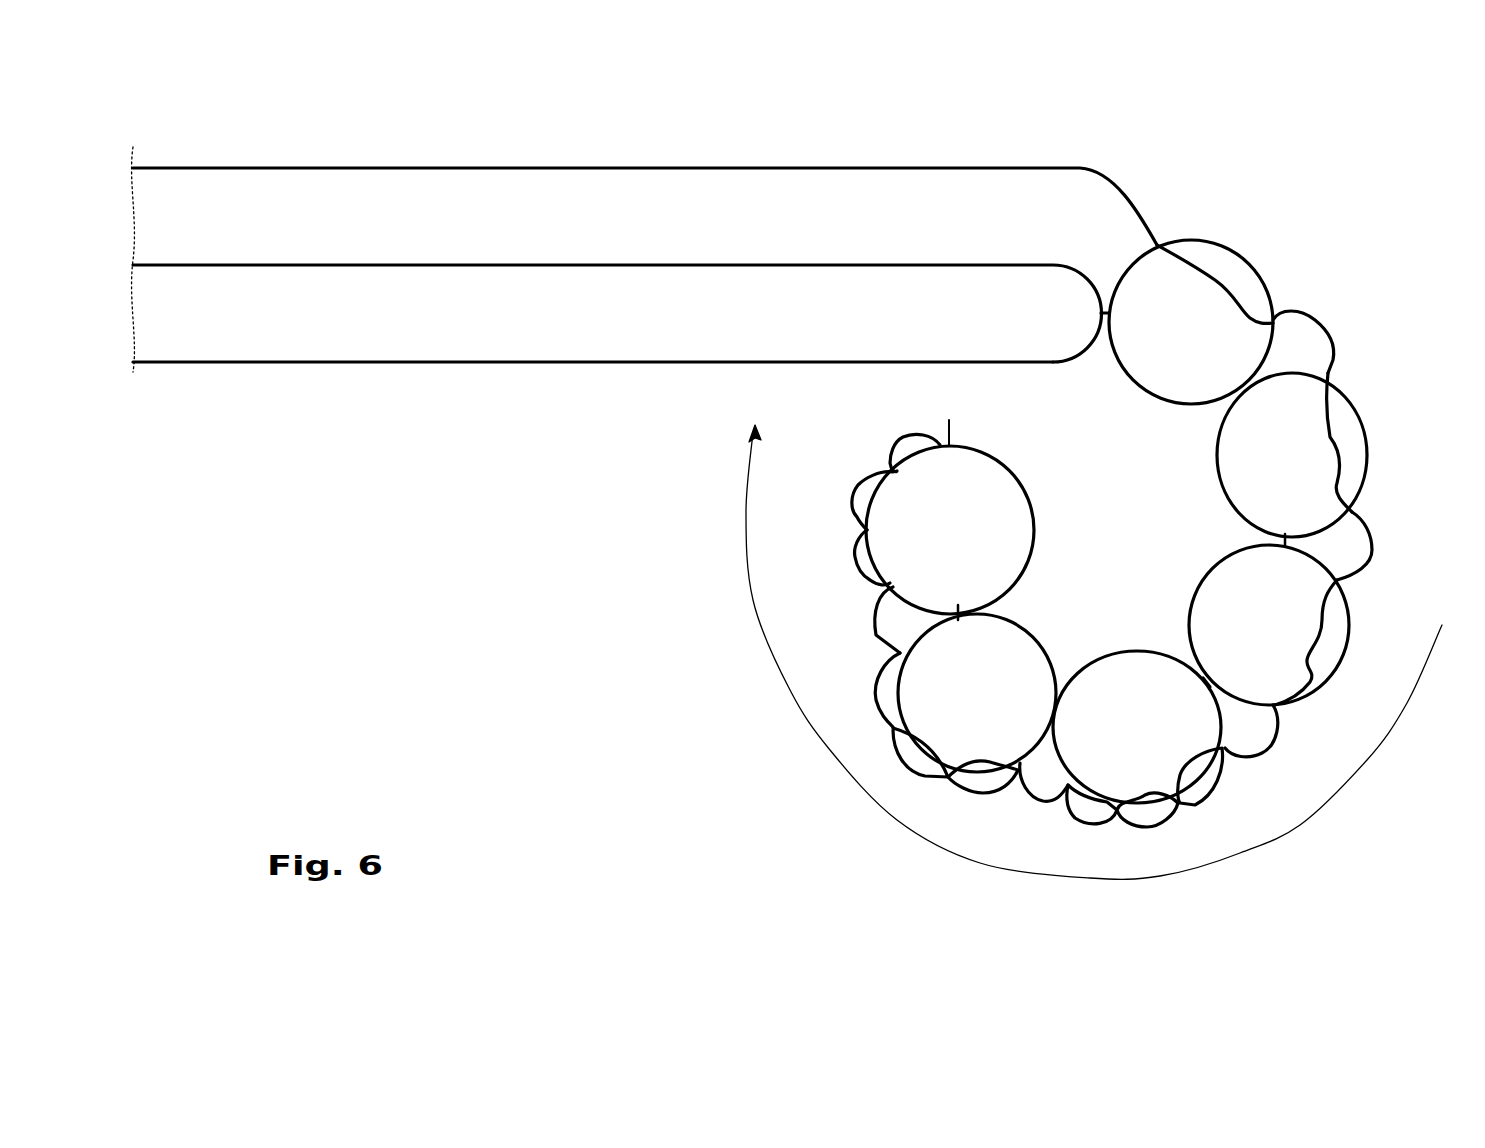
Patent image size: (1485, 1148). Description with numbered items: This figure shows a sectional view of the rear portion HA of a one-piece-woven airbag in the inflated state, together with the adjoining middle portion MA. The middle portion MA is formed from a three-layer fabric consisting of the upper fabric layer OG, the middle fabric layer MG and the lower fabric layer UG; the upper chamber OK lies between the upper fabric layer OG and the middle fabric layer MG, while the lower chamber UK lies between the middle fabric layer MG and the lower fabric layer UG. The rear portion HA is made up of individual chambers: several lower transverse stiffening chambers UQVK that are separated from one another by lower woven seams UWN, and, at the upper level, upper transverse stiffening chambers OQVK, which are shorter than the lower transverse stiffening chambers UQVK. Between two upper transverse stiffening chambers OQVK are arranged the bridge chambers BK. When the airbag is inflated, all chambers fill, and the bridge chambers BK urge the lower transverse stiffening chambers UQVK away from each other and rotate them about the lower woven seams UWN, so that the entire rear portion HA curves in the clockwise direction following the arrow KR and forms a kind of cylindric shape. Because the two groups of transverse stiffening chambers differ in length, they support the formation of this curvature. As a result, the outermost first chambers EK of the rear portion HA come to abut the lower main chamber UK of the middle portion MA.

The middle portion MA is at (1104, 131).
The rear portion HA is at (1382, 200).
The upper fabric layer OG is at (182, 168).
The middle fabric layer MG is at (182, 265).
The lower fabric layer UG is at (182, 362).
The upper chamber OK is at (590, 216).
The lower chamber UK is at (590, 313).
The upper transverse stiffening chamber OQVK is at (1237, 270).
The lower transverse stiffening chamber UQVK is at (1230, 462).
The bridge chamber BK is at (1308, 330).
The lower woven seam UWN is at (1285, 540).
The first chamber EK is at (1033, 418).
The arrow KR is at (745, 512).